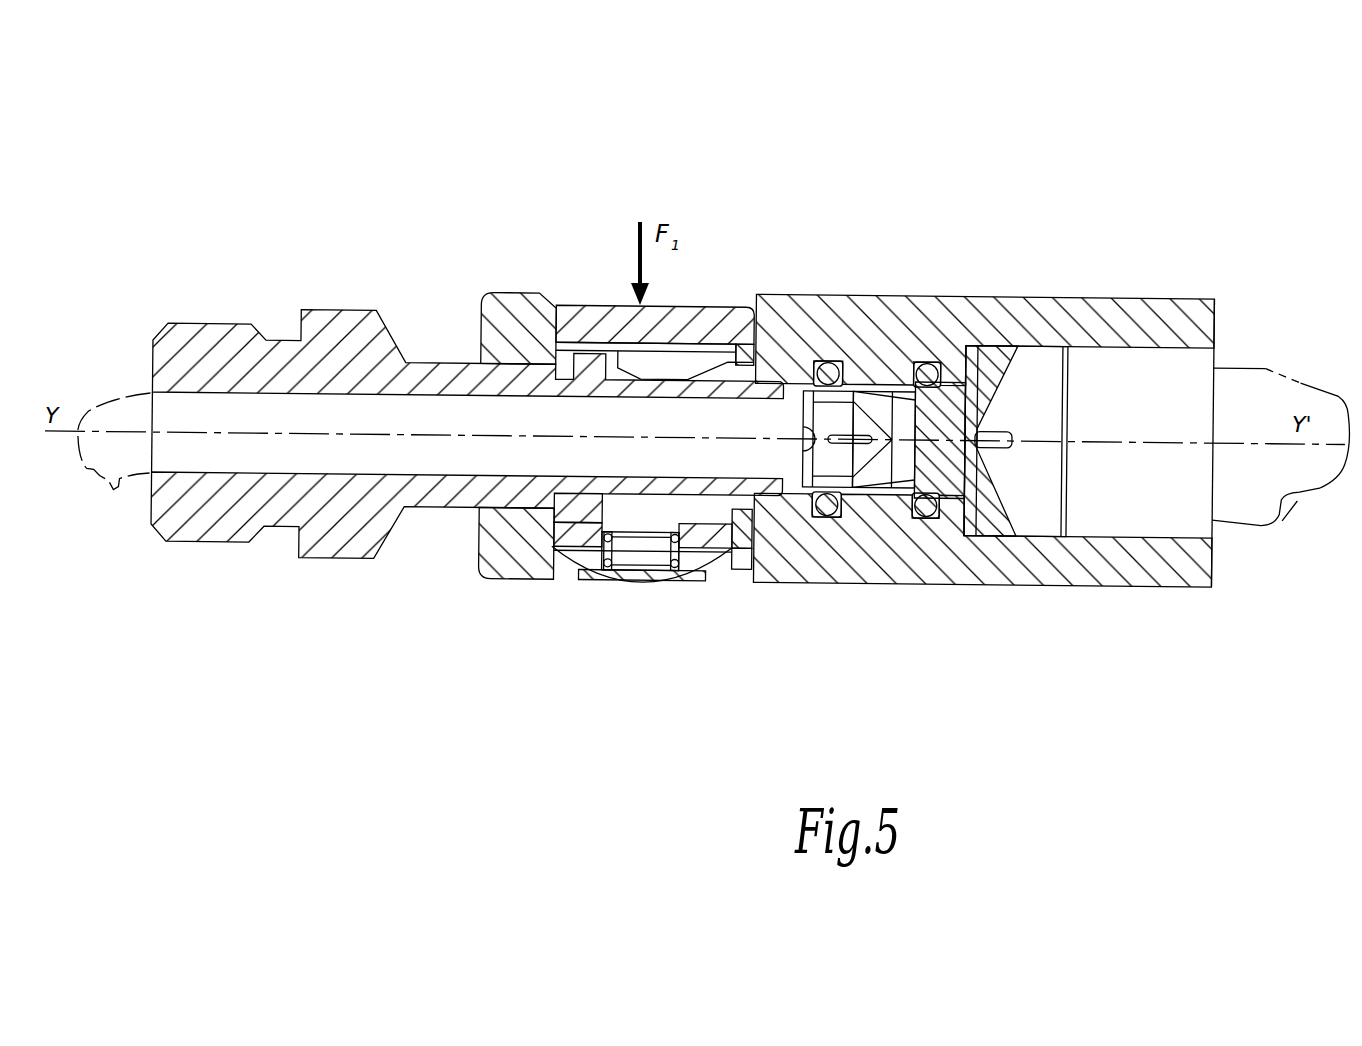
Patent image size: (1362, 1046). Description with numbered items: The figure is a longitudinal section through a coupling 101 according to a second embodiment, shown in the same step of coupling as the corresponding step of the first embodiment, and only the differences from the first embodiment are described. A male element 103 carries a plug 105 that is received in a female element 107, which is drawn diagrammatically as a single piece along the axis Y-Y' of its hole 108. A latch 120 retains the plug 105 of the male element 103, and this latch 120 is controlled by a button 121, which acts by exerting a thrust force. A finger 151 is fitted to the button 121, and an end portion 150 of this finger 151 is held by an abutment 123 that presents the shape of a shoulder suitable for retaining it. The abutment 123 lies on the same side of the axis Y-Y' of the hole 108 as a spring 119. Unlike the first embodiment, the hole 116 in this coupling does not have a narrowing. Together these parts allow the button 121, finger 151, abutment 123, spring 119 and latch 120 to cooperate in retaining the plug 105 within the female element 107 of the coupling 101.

The coupling 101 is at (1157, 187).
The male element 103 is at (390, 267).
The plug 105 is at (677, 383).
The female element 107 is at (1180, 307).
The hole 108 is at (1190, 408).
The hole 116 is at (698, 583).
The spring 119 is at (608, 563).
The latch 120 is at (558, 532).
The button 121 is at (622, 307).
The abutment 123 is at (745, 545).
The end portion 150 is at (740, 550).
The finger 151 is at (760, 358).